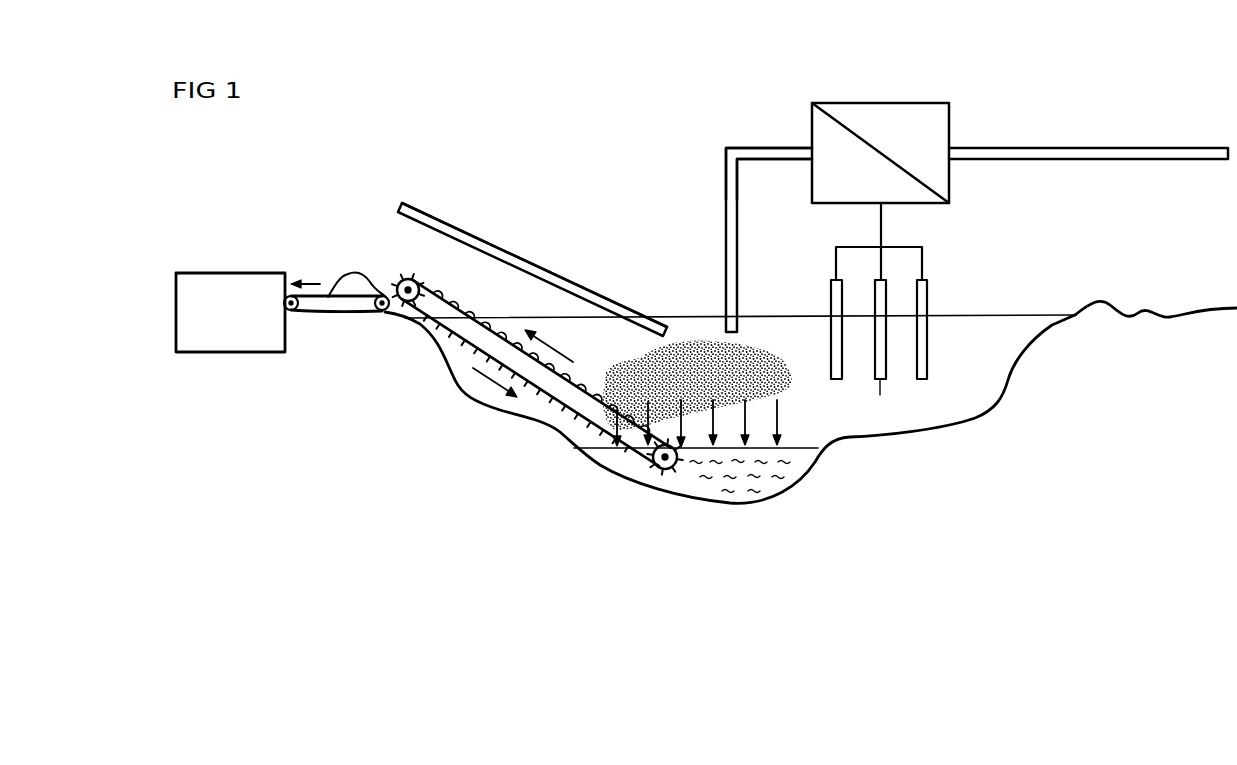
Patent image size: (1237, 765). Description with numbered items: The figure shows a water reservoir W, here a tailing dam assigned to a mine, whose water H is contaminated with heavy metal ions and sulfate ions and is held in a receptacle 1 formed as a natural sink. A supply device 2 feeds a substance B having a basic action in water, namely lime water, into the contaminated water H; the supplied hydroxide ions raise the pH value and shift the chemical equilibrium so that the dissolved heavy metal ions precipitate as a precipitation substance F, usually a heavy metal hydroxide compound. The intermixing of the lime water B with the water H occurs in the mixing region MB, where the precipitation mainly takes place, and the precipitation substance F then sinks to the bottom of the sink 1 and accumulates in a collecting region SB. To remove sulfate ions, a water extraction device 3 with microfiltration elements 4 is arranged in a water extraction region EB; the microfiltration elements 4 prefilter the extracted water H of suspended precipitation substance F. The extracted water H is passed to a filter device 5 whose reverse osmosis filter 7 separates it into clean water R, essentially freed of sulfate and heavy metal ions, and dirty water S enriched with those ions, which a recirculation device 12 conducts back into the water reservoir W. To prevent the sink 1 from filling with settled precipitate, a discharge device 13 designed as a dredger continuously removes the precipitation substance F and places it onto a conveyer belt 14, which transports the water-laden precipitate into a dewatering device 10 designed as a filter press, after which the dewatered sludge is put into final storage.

The receptacle 1 is at (448, 381).
The supply device 2 is at (481, 227).
The water extraction device 3 is at (935, 278).
The microfiltration elements 4 is at (838, 368).
The filter device 5 is at (897, 103).
The reverse osmosis filter 7 is at (838, 118).
The dewatering device 10 is at (212, 273).
The recirculation device 12 is at (726, 214).
The discharge device 13 is at (541, 398).
The conveyer belt 14 is at (334, 273).
The substance having a basic action in water B is at (541, 270).
The dirty water S is at (762, 148).
The clean water R is at (1076, 148).
The water reservoir W is at (1032, 312).
The water H is at (993, 335).
The precipitation substance F is at (756, 360).
The mixing region MB is at (688, 342).
The collecting region SB is at (788, 441).
The water extraction region EB is at (963, 369).